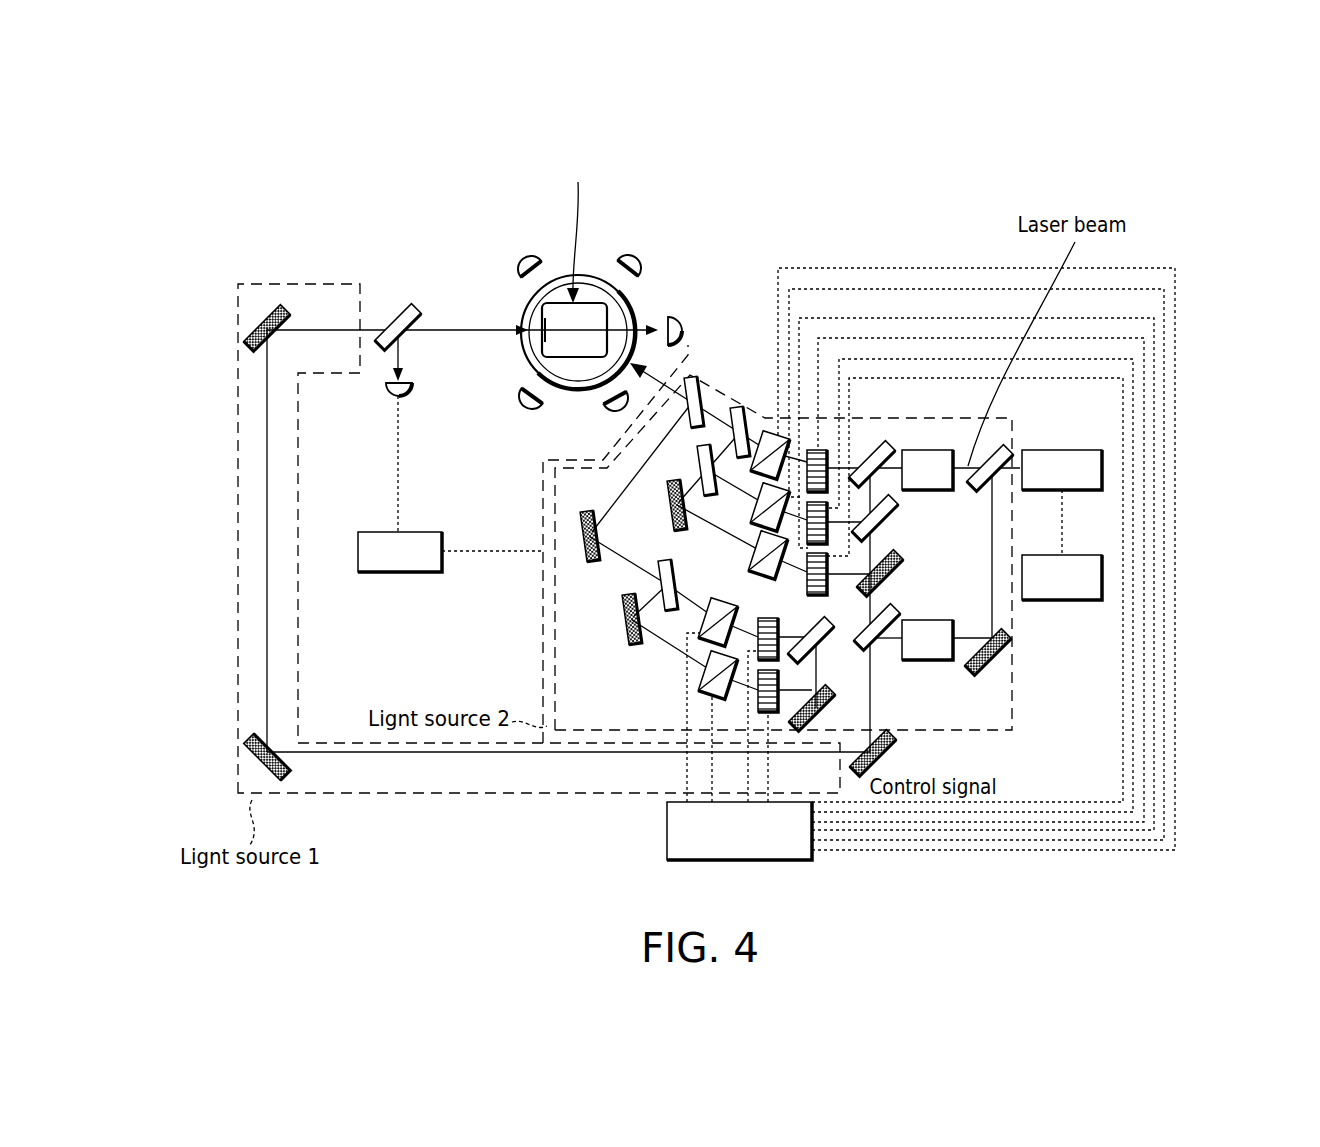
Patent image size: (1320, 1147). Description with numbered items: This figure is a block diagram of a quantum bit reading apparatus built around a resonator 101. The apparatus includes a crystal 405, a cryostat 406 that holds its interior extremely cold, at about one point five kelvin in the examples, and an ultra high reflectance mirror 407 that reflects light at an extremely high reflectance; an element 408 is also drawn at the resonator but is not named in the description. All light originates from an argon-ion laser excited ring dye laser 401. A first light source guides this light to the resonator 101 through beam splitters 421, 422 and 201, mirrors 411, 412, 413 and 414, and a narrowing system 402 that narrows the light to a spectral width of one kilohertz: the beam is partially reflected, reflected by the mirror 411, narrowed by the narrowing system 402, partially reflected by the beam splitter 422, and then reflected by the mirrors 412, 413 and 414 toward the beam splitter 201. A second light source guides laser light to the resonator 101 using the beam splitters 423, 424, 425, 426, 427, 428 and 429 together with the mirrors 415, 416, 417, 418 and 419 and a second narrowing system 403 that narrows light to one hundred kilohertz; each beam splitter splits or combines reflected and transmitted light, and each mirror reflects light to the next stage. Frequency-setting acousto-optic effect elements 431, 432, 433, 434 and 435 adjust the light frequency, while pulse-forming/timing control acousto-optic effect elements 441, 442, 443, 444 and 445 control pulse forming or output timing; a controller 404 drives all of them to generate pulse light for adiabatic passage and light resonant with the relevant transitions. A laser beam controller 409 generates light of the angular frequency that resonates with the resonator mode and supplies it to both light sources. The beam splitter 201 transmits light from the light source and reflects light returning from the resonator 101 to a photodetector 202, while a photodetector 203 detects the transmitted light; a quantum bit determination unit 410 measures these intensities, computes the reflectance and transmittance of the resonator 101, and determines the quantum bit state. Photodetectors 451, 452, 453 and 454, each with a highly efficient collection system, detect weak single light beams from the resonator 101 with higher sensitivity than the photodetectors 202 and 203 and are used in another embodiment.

The resonator 101 is at (577, 229).
The beam splitter 201 is at (417, 325).
The photodetector 202 is at (392, 398).
The photodetector 203 is at (681, 316).
The argon-ion laser excited ring dye laser 401 is at (1102, 470).
The narrowing system 402 is at (948, 662).
The narrowing system 403 is at (925, 492).
The controller 404 is at (667, 839).
The crystal 405 is at (565, 308).
The cryostat 406 is at (583, 274).
The ultra high reflectance mirror 407 is at (613, 322).
The cell window 408 is at (541, 337).
The laser beam controller 409 is at (1088, 601).
The quantum bit determination unit 410 is at (358, 549).
The mirror 411 is at (1004, 657).
The mirror 412 is at (890, 749).
The mirror 413 is at (260, 761).
The mirror 414 is at (272, 312).
The mirror 415 is at (832, 703).
The mirror 416 is at (622, 610).
The mirror 417 is at (580, 556).
The mirror 418 is at (895, 576).
The mirror 419 is at (667, 501).
The beam splitter 421 is at (1004, 456).
The beam splitter 422 is at (892, 612).
The beam splitter 423 is at (820, 640).
The beam splitter 424 is at (676, 584).
The beam splitter 425 is at (889, 446).
The beam splitter 426 is at (889, 513).
The beam splitter 427 is at (738, 408).
The beam splitter 428 is at (701, 460).
The beam splitter 429 is at (698, 378).
The frequency-setting acousto-optic effect element 431 is at (760, 706).
The frequency-setting acousto-optic effect element 432 is at (759, 617).
The frequency-setting acousto-optic effect element 433 is at (828, 590).
The frequency-setting acousto-optic effect element 434 is at (830, 545).
The frequency-setting acousto-optic effect element 435 is at (822, 450).
The pulse-forming/timing control acousto-optic effect element 441 is at (704, 683).
The pulse-forming/timing control acousto-optic effect element 442 is at (704, 626).
The pulse-forming/timing control acousto-optic effect element 443 is at (753, 554).
The pulse-forming/timing control acousto-optic effect element 444 is at (755, 524).
The pulse-forming/timing control acousto-optic effect element 445 is at (784, 438).
The photodetector 451 is at (526, 258).
The photodetector 452 is at (623, 258).
The photodetector 453 is at (527, 400).
The photodetector 454 is at (606, 399).